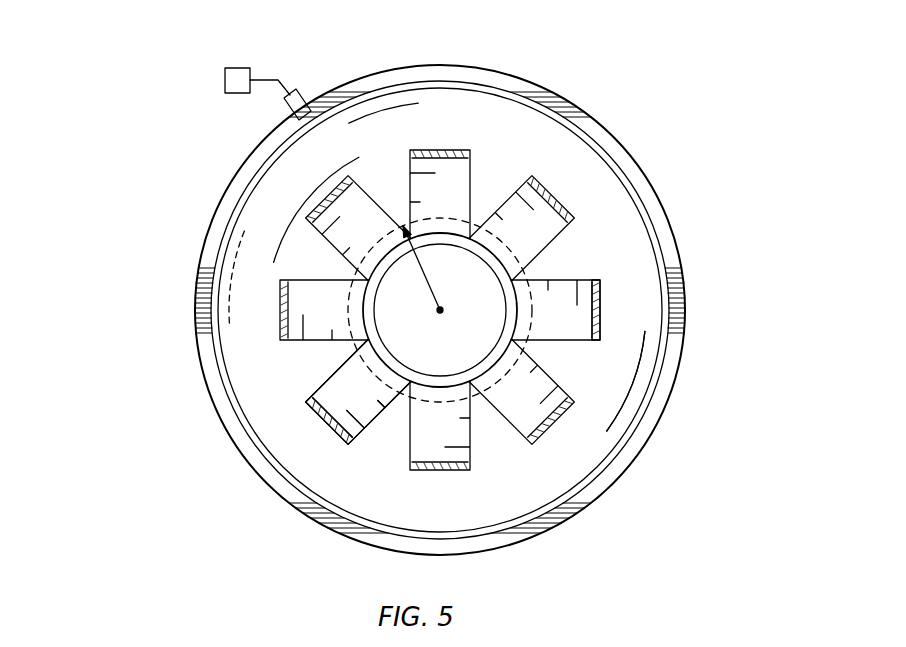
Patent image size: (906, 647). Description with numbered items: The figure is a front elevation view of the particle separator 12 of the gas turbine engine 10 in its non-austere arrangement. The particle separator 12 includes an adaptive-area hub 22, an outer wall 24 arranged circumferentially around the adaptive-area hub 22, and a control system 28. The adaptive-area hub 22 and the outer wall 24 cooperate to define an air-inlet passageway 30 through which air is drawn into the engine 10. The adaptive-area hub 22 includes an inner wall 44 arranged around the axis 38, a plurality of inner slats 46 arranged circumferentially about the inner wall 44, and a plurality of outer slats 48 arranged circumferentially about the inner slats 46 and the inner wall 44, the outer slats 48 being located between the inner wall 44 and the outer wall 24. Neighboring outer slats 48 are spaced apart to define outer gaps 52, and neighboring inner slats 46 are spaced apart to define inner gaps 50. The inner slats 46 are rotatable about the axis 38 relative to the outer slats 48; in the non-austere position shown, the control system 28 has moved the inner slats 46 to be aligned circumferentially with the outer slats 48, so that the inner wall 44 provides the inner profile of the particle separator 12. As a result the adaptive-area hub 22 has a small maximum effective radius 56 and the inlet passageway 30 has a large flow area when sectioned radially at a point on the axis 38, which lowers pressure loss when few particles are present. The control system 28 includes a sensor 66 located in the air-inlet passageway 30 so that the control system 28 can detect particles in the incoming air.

The gas turbine engine 10 is at (147, 182).
The particle separator 12 is at (690, 168).
The adaptive-area hub 22 is at (536, 168).
The outer wall 24 is at (193, 343).
The control system 28 is at (238, 66).
The inlet passageway 30 is at (258, 412).
The axis 38 is at (443, 314).
The inner wall 44 is at (475, 393).
The inner slats 46 is at (586, 322).
The outer slats 48 is at (604, 309).
The inner gaps 50 is at (402, 421).
The outer gaps 52 is at (365, 435).
The maximum effective radius 56 is at (418, 273).
The sensor 66 is at (306, 92).